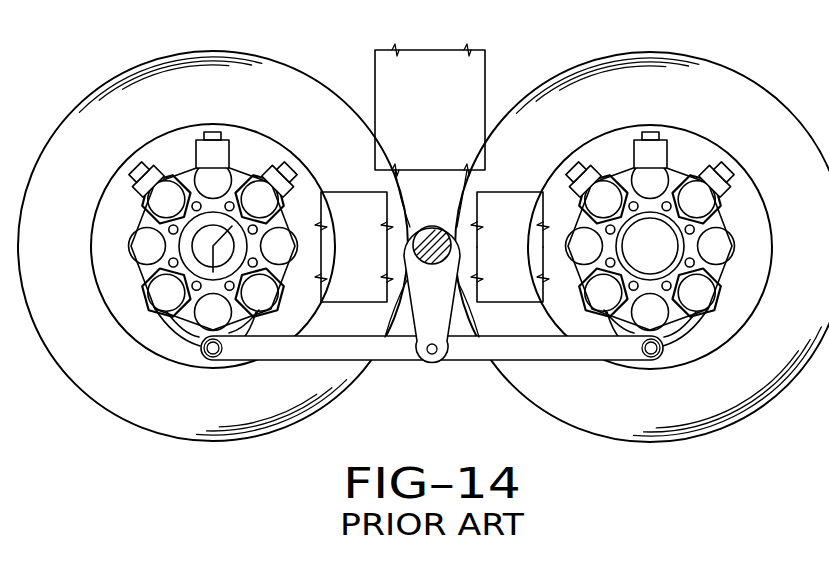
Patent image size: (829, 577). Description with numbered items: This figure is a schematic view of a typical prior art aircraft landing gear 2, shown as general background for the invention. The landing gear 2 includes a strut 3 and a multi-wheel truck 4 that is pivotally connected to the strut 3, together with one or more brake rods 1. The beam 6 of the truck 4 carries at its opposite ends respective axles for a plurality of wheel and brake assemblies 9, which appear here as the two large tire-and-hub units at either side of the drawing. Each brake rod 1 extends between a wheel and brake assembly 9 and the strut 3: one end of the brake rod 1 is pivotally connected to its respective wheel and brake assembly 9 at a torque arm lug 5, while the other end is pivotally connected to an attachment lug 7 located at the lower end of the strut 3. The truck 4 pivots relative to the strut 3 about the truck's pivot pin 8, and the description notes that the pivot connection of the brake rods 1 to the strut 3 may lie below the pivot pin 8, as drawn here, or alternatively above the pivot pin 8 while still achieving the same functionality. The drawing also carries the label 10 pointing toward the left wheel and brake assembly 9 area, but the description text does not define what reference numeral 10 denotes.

The brake rod 1 is at (338, 352).
The aircraft landing gear 2 is at (155, 450).
The strut 3 is at (375, 70).
The multi-wheel truck 4 is at (517, 180).
The torque arm lug 5 is at (197, 357).
The beam 6 is at (498, 283).
The attachment lug 7 is at (428, 330).
The pivot pin 8 is at (423, 232).
The wheel and brake assembly 9 is at (94, 80).
The steering knuckle 10 is at (305, 153).